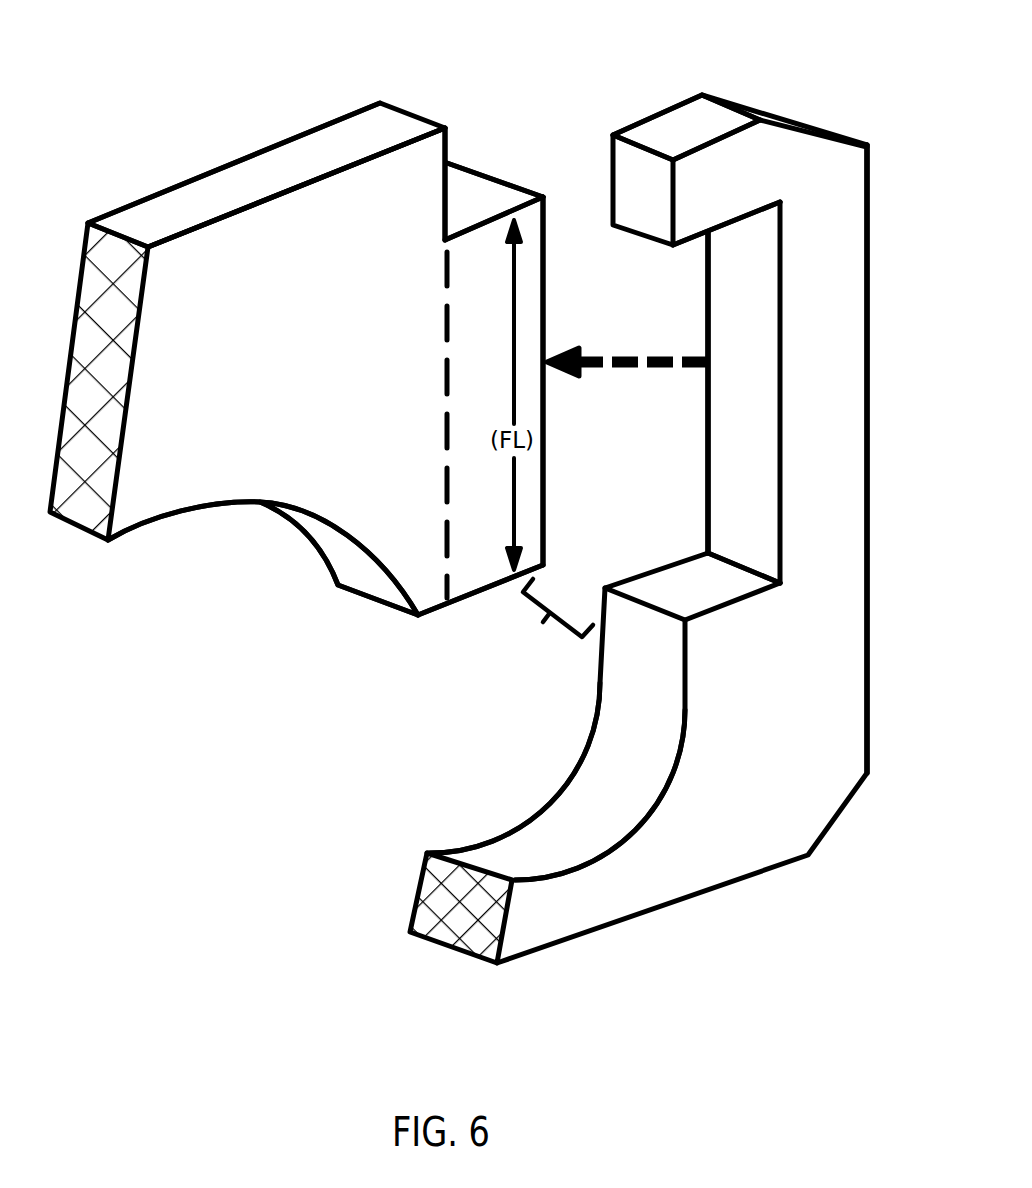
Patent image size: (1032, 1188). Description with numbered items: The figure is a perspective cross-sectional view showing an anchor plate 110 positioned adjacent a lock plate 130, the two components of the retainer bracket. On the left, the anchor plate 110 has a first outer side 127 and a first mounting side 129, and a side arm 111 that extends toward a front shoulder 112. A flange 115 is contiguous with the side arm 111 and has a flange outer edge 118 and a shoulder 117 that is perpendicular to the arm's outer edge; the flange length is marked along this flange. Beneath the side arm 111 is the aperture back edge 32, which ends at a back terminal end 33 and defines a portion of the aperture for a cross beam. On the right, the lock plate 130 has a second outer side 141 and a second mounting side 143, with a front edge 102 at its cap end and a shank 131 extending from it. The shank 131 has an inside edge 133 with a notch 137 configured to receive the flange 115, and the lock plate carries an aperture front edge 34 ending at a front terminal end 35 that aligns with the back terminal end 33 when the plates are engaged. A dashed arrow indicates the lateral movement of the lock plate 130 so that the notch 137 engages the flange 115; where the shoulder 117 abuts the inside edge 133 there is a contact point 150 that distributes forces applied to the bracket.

The anchor plate 110 is at (86, 184).
The first outer side 127 is at (181, 180).
The first mounting side 129 is at (248, 248).
The side arm 111 is at (421, 270).
The shoulder 117 is at (463, 207).
The flange 115 is at (488, 290).
The flange outer edge 118 is at (548, 233).
The front shoulder 112 is at (482, 593).
The aperture back edge 32 is at (260, 507).
The back terminal end 33 is at (377, 605).
The aperture front edge 34 is at (563, 813).
The front terminal end 35 is at (652, 622).
The front edge 102 is at (680, 913).
The lock plate 130 is at (825, 105).
The second outer side 141 is at (662, 118).
The inside edge 133 is at (745, 213).
The shank 131 is at (868, 428).
The notch 137 is at (678, 319).
The second mounting side 143 is at (702, 510).
The contact point 150 is at (550, 617).